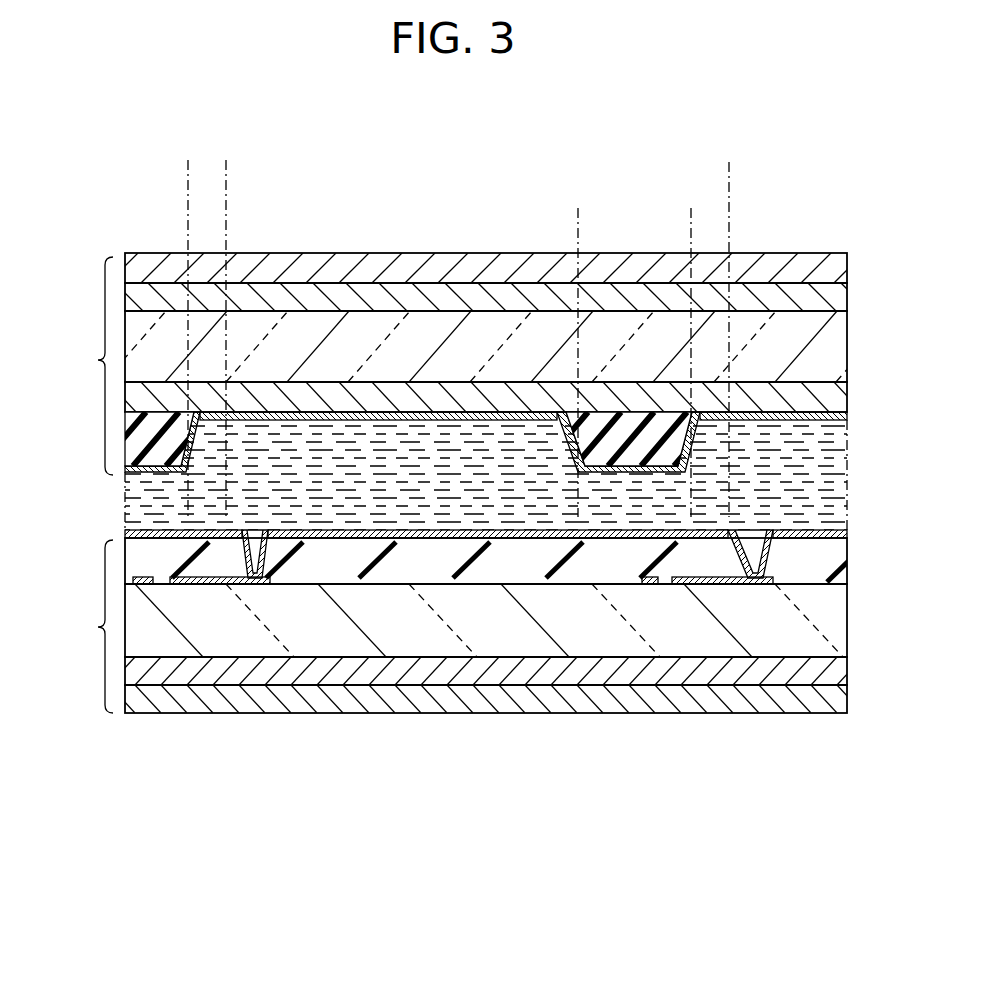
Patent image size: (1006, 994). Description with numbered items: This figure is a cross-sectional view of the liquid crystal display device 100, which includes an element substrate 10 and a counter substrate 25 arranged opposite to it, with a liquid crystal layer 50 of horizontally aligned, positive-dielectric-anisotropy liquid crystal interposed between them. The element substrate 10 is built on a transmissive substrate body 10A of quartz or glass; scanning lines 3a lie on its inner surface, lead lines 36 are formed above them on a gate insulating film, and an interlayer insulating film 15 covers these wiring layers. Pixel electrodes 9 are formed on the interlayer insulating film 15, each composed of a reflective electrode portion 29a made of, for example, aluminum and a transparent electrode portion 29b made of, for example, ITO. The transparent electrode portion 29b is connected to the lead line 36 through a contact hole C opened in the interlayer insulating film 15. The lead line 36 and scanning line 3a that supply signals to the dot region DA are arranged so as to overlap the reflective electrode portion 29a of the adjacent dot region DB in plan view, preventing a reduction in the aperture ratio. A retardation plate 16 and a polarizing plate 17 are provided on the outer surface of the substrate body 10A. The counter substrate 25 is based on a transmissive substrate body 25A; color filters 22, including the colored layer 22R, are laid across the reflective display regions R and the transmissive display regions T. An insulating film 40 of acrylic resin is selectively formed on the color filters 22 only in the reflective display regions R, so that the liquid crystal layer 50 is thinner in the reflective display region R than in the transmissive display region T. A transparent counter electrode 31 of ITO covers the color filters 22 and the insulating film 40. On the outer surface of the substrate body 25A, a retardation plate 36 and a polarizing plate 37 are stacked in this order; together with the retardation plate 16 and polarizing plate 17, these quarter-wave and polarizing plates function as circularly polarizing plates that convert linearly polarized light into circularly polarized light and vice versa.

The liquid crystal display device 100 is at (796, 168).
The counter substrate 25 is at (523, 521).
The polarizing plate 37 is at (832, 268).
The lead line / retardation plate 36 is at (832, 296).
The substrate body 25A is at (832, 350).
The color filters 22 is at (554, 398).
The color filter 22R is at (832, 400).
The counter electrode 31 is at (840, 418).
The liquid crystal layer 50 is at (830, 476).
The insulating film 40 is at (127, 452).
The element substrate 10 is at (501, 631).
The pixel electrode 9 is at (840, 527).
The contact hole C is at (256, 534).
The interlayer insulating film 15 is at (524, 663).
The reflective electrode portion 29a is at (577, 560).
The transparent electrode portion 29b is at (417, 560).
The scanning line 3a is at (135, 588).
The substrate body 10A is at (830, 616).
The retardation plate 16 is at (830, 672).
The polarizing plate 17 is at (830, 712).
The dot region DA is at (720, 177).
The dot region DB is at (180, 177).
The reflective display region R is at (180, 224).
The transmissive display region T is at (570, 224).